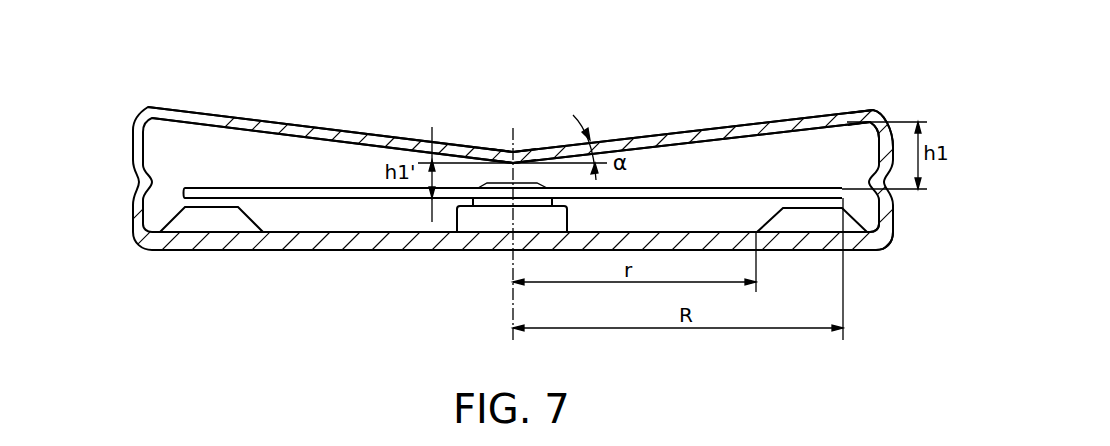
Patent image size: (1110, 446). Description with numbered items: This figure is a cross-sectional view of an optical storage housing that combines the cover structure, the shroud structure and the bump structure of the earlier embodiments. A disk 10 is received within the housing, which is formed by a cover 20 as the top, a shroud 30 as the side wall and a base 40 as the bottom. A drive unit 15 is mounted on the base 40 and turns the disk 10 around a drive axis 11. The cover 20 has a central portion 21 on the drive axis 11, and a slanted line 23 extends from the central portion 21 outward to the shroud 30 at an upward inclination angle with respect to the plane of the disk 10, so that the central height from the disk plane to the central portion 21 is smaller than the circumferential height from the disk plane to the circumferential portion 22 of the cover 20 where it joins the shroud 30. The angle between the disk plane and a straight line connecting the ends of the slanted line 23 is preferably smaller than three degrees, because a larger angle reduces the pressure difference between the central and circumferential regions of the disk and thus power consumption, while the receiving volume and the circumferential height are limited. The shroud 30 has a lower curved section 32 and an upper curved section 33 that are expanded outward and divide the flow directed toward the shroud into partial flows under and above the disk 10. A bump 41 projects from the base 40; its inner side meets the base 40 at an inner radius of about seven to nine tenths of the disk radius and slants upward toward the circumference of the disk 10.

The disk 10 is at (333, 188).
The drive axis 11 is at (520, 148).
The drive unit 15 is at (487, 225).
The cover 20 is at (258, 122).
The central portion 21 is at (508, 146).
The circumferential portion 22 is at (877, 110).
The slanted line 23 is at (740, 127).
The shroud 30 is at (133, 143).
The lower curved section 32 is at (887, 215).
The upper curved section 33 is at (897, 118).
The base 40 is at (365, 249).
The bump 41 is at (204, 222).